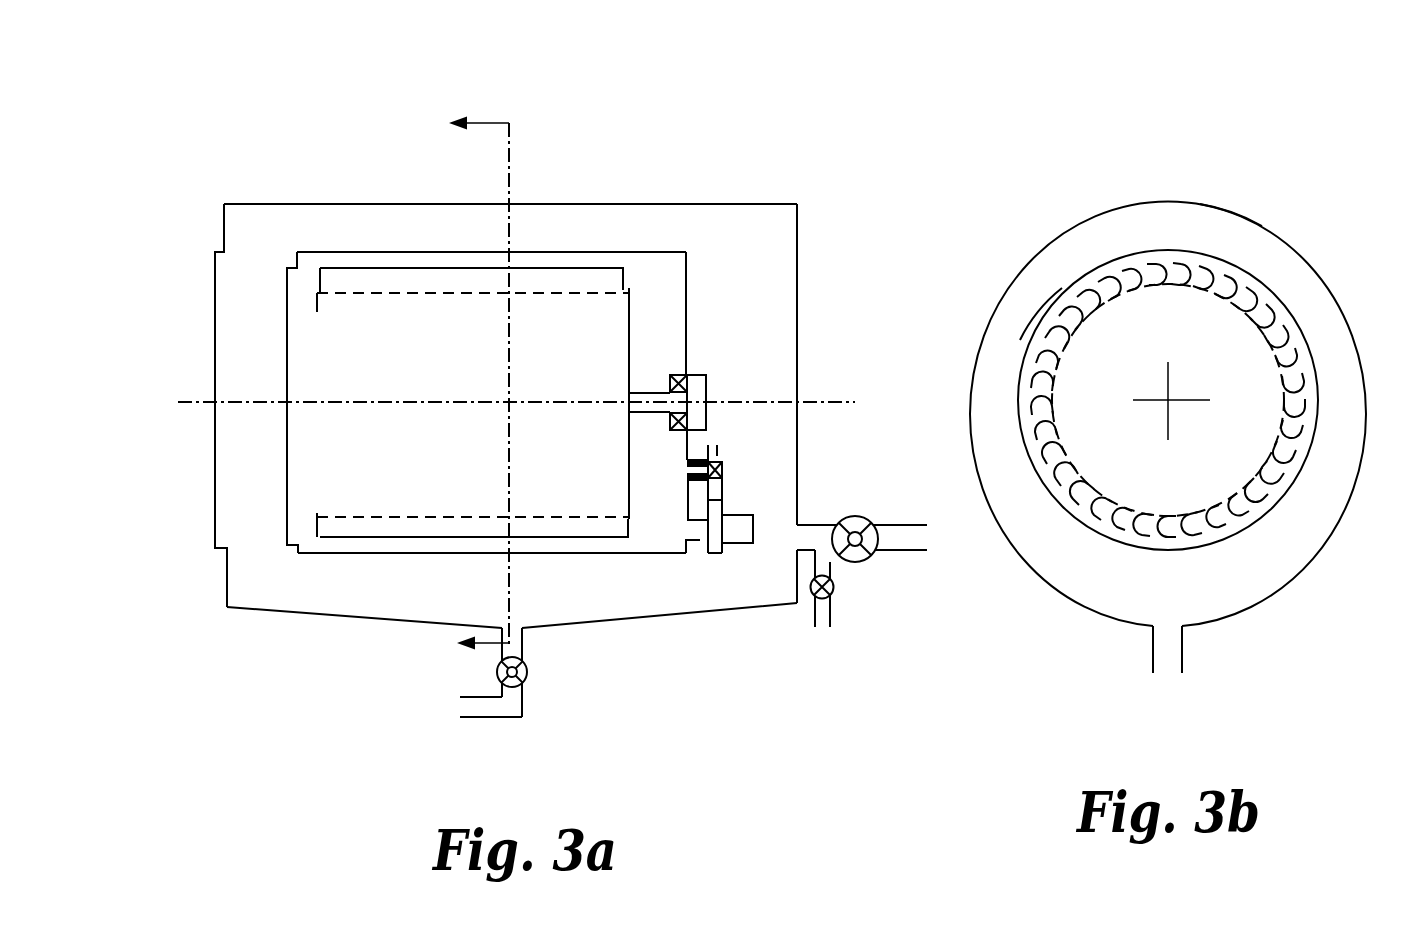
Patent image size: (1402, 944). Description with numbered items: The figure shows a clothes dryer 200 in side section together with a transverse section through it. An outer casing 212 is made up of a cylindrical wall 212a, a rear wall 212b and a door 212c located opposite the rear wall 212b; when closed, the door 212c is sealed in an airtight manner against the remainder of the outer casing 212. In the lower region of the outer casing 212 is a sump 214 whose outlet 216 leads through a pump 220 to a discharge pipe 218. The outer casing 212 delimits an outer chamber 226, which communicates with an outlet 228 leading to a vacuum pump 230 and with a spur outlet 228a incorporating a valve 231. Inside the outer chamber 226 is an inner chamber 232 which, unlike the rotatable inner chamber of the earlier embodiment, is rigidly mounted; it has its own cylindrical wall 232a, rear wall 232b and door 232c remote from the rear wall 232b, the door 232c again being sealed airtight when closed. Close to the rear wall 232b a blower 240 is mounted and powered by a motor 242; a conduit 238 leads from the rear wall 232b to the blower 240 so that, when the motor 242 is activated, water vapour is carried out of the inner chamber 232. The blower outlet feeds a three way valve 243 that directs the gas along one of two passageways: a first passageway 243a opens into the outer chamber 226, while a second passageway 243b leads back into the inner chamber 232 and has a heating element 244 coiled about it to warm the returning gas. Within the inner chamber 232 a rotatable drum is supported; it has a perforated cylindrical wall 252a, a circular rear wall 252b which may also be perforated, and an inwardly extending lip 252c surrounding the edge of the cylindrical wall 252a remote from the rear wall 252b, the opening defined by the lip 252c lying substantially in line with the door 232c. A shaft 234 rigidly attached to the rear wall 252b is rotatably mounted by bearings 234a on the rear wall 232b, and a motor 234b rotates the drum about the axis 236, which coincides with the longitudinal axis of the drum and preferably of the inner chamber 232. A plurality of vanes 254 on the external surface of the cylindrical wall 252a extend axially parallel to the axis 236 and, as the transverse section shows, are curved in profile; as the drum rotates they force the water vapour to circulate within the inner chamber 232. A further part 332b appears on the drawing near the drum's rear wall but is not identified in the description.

In FIG. 3A, the clothes dryer 200 is at (288, 178).
In FIG. 3B, the clothes dryer 200 is at (1130, 183).
In FIG. 3A, the outer casing 212 is at (500, 416).
In FIG. 3A, the cylindrical wall 212a is at (427, 204).
In FIG. 3B, the cylindrical wall 212a is at (1235, 212).
In FIG. 3A, the rear wall 212b is at (800, 222).
In FIG. 3A, the door 212c is at (213, 275).
In FIG. 3A, the sump 214 is at (333, 617).
In FIG. 3B, the sump 214 is at (1238, 612).
In FIG. 3A, the outlet 216 is at (515, 647).
In FIG. 3B, the outlet 216 is at (1183, 660).
In FIG. 3A, the discharge pipe 218 is at (502, 710).
In FIG. 3A, the pump 220 is at (528, 678).
In FIG. 3A, the outer chamber 226 is at (770, 586).
In FIG. 3B, the outer chamber 226 is at (1302, 268).
In FIG. 3A, the outlet 228 is at (818, 532).
In FIG. 3A, the spur outlet 228a is at (830, 617).
In FIG. 3A, the vacuum pump 230 is at (870, 558).
In FIG. 3A, the valve 231 is at (836, 590).
In FIG. 3A, the inner chamber 232 is at (469, 348).
In FIG. 3B, the inner chamber 232 is at (1105, 282).
In FIG. 3A, the cylindrical wall 232a is at (335, 252).
In FIG. 3B, the cylindrical wall 232a is at (1040, 320).
In FIG. 3A, the rear wall 232b is at (688, 271).
In FIG. 3A, the door 232c is at (283, 345).
In FIG. 3A, the shaft 234 is at (647, 393).
In FIG. 3A, the bearings 234a is at (684, 375).
In FIG. 3A, the motor 234b is at (707, 392).
In FIG. 3A, the axis 236 is at (480, 405).
In FIG. 3B, the axis 236 is at (1170, 398).
In FIG. 3A, the conduit 238 is at (700, 542).
In FIG. 3A, the blower 240 is at (717, 560).
In FIG. 3A, the motor 242 is at (743, 528).
In FIG. 3A, the three way valve 243 is at (721, 472).
In FIG. 3A, the first passageway 243a is at (718, 453).
In FIG. 3A, the second passageway 243b is at (692, 462).
In FIG. 3A, the heating element 244 is at (690, 488).
In FIG. 3A, the perforated cylindrical wall 252a is at (418, 295).
In FIG. 3B, the perforated cylindrical wall 252a is at (1072, 465).
In FIG. 3A, the circular rear wall 252b is at (629, 319).
In FIG. 3A, the inwardly extending lip 252c is at (322, 512).
In FIG. 3A, the vanes 254 is at (528, 278).
In FIG. 3B, the vanes 254 is at (1165, 538).
In FIG. 3A, the drum end wall opening 332b is at (627, 439).